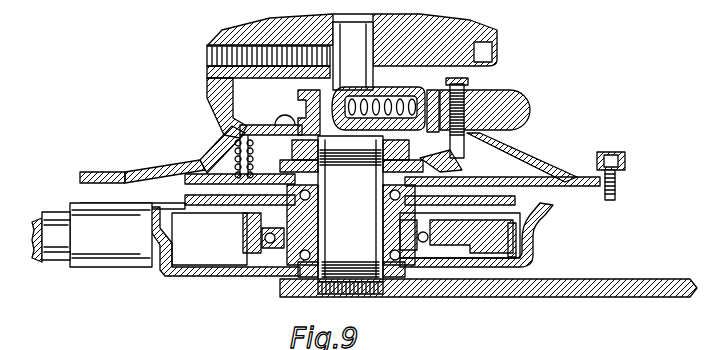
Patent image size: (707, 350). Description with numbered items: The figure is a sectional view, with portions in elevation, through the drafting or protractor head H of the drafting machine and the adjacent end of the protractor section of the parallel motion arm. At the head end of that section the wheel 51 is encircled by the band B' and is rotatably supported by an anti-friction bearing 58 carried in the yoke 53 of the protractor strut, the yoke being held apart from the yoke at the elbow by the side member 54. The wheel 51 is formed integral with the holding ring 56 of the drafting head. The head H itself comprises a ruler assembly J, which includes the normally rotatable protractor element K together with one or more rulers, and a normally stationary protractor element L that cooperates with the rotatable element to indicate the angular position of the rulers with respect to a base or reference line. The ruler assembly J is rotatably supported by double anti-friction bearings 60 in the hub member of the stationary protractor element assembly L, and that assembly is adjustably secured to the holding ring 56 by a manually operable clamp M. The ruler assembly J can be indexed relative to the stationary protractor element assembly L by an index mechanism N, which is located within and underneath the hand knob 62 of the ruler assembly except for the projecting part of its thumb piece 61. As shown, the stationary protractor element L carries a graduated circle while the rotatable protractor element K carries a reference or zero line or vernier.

The drafting or protractor head H is at (480, 22).
The hand knob 62 is at (217, 88).
The thumb piece 61 is at (515, 98).
The manually operable clamp M is at (625, 162).
The stationary protractor element L is at (107, 172).
The rotatable protractor element K is at (165, 172).
The index mechanism N is at (212, 163).
The double anti-friction bearings 60 is at (388, 255).
The wheel 51 is at (222, 240).
The holding ring 56 is at (542, 208).
The anti-friction bearing 58 is at (432, 238).
The band B' is at (296, 240).
The yoke 53 is at (100, 250).
The side member 54 is at (58, 225).
The ruler assembly J is at (690, 283).